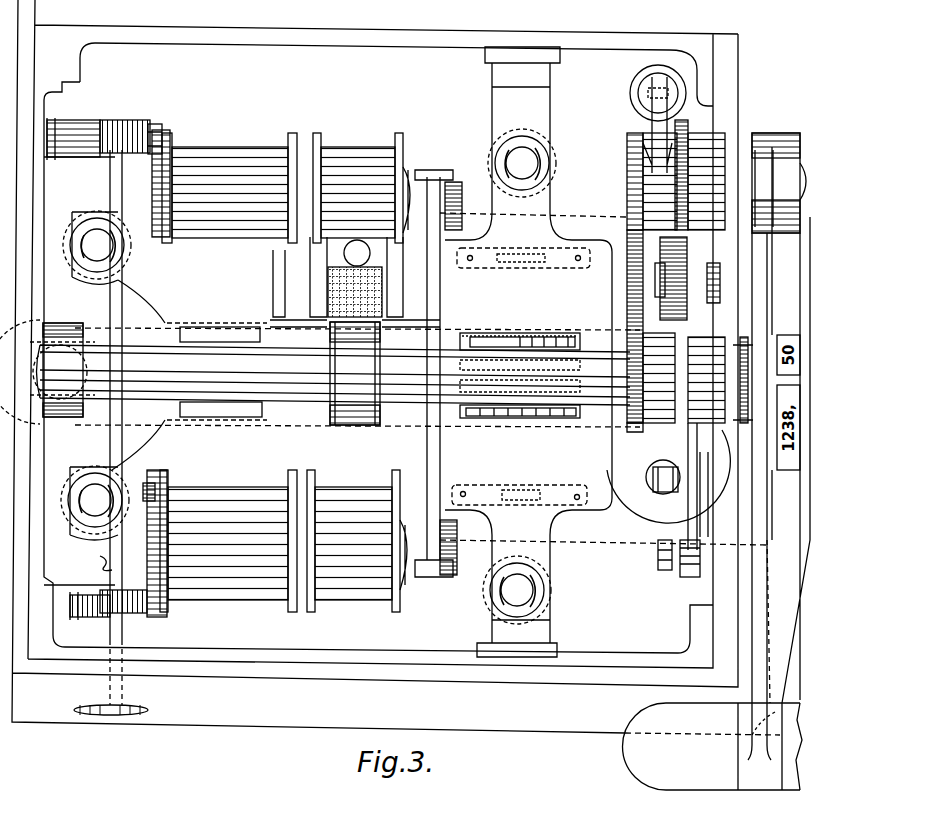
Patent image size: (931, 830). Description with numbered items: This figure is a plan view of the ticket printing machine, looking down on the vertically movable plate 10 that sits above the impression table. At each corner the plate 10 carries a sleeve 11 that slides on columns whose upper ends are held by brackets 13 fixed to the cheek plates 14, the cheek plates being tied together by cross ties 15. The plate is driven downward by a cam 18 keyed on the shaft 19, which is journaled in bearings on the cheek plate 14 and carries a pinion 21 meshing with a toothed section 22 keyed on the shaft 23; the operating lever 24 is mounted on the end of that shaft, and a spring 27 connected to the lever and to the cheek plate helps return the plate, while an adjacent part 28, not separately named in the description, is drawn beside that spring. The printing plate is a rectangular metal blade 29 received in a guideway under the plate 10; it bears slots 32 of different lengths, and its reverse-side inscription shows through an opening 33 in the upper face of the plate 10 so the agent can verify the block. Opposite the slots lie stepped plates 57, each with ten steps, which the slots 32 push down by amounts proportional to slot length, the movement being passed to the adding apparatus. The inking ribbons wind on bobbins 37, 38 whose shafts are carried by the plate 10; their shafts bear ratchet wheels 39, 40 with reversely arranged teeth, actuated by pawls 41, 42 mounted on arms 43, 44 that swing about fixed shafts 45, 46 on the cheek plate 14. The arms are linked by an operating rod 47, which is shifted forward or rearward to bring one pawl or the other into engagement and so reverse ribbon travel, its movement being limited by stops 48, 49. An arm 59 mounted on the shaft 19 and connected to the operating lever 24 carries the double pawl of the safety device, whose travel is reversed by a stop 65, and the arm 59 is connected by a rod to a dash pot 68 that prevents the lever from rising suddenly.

The plate 10 is at (421, 373).
The sleeve 11 is at (103, 278).
The bracket 13 is at (85, 220).
The cheek plate 14 is at (727, 323).
The cross tie 15 is at (354, 40).
The cam 18 is at (378, 387).
The shaft 19 is at (250, 372).
The pinion 21 is at (633, 432).
The toothed section 22 is at (630, 306).
The shaft 23 is at (781, 418).
The operating lever 24 is at (761, 650).
The spring 27 is at (640, 95).
The rod 28 is at (657, 125).
The metal blade 29 is at (478, 333).
The slot 32 is at (543, 336).
The opening 33 is at (227, 326).
The bobbin 37 is at (288, 197).
The bobbin 38 is at (270, 533).
The ratchet wheel 39 is at (160, 196).
The ratchet wheel 40 is at (147, 489).
The pawl 41 is at (155, 125).
The pawl 42 is at (155, 612).
The arm 43 is at (108, 130).
The arm 44 is at (125, 613).
The fixed shaft 45 is at (80, 132).
The fixed shaft 46 is at (88, 614).
The operating rod 47 is at (118, 706).
The stop 48 is at (118, 468).
The stop 49 is at (102, 558).
The stepped plate 57 is at (515, 336).
The arm 59 is at (667, 566).
The stop 65 is at (694, 570).
The dash pot 68 is at (668, 476).